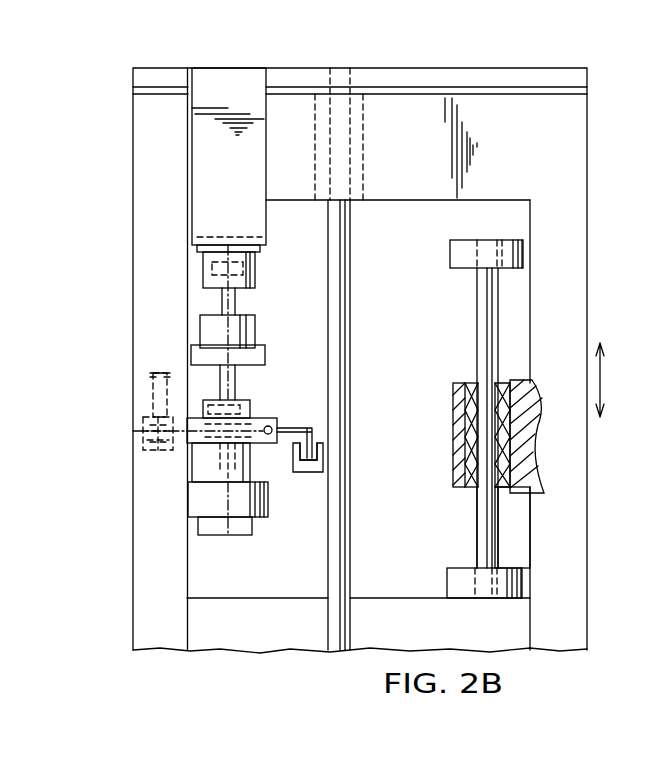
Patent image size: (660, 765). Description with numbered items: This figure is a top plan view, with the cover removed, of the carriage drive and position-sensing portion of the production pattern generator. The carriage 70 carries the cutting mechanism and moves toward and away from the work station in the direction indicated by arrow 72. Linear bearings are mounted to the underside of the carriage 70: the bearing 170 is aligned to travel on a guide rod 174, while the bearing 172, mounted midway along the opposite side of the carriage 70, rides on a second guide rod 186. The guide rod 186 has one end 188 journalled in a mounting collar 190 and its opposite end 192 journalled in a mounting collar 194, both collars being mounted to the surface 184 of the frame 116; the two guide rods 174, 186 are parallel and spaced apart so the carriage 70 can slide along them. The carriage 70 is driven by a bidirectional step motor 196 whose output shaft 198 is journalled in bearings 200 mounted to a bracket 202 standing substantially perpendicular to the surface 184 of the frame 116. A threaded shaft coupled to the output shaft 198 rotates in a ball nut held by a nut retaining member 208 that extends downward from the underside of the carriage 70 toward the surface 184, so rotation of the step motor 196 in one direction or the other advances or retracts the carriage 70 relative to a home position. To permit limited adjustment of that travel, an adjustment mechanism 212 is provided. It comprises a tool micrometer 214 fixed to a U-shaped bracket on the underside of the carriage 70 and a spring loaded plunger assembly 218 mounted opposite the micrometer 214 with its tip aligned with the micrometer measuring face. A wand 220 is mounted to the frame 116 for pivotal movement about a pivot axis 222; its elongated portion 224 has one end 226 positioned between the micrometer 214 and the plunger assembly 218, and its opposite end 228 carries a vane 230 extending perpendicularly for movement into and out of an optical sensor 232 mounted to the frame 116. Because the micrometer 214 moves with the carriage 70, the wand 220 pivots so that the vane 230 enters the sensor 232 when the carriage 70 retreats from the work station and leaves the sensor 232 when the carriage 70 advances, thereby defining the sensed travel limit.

The carriage 70 is at (527, 537).
The arrow 72 is at (602, 375).
The frame 116 is at (588, 500).
The linear bearing 170 is at (363, 125).
The linear bearing 172 is at (455, 400).
The guide rod 174 is at (350, 505).
The surface 184 is at (407, 581).
The guide rod 186 is at (477, 497).
The end 188 is at (475, 566).
The mounting collar 190 is at (447, 592).
The end 192 is at (477, 272).
The mounting collar 194 is at (463, 240).
The step motor 196 is at (255, 270).
The output shaft 198 is at (235, 300).
The bearings 200 is at (200, 333).
The bracket 202 is at (265, 352).
The nut retaining member 208 is at (266, 510).
The adjustment mechanism 212 is at (140, 422).
The tool micrometer 214 is at (153, 398).
The spring loaded plunger assembly 218 is at (147, 440).
The wand 220 is at (266, 436).
The pivot axis 222 is at (270, 425).
The elongated portion 224 is at (197, 443).
The end 226 is at (147, 432).
The end 228 is at (312, 431).
The vane 230 is at (325, 455).
The optical sensor 232 is at (307, 472).